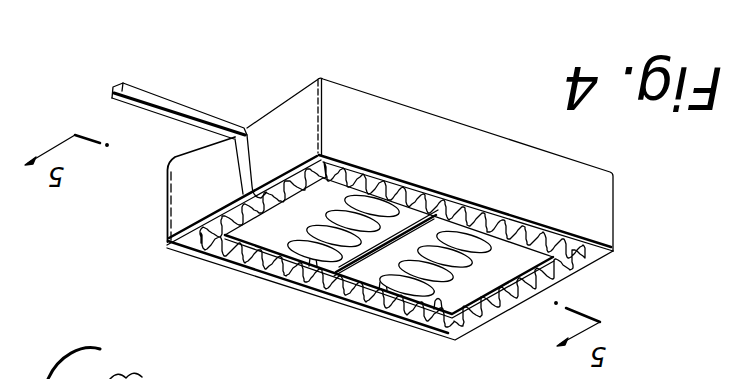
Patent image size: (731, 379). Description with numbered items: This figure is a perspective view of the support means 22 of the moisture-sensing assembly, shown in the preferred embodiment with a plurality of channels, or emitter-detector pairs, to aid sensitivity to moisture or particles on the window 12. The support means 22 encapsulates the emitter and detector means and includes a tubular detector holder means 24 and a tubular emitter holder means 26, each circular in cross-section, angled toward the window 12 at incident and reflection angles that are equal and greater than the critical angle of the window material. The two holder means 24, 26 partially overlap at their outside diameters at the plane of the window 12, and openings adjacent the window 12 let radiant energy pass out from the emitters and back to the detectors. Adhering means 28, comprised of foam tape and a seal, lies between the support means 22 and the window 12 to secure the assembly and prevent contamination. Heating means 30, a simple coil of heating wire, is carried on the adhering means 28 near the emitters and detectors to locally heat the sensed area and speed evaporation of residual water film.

The window 12 is at (436, 305).
The support means 22 is at (167, 193).
The detector holder means 24 is at (312, 262).
The emitter holder means 26 is at (381, 283).
The adhering means 28 is at (180, 248).
The heating means 30 is at (219, 248).